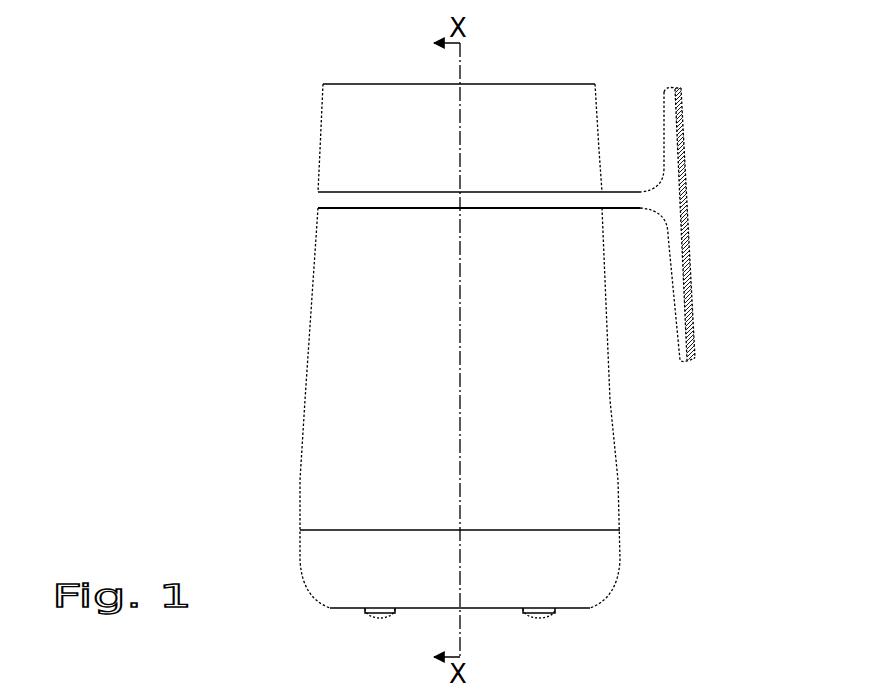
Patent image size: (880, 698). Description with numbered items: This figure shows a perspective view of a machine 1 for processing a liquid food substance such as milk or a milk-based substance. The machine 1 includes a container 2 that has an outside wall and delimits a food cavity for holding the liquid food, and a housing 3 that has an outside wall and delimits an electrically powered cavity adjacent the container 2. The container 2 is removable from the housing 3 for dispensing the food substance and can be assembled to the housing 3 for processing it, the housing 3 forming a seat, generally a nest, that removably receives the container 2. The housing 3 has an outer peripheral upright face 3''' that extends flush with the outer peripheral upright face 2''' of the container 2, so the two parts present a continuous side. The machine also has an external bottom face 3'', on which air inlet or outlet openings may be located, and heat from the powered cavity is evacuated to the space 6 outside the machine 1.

The machine 1 is at (176, 79).
The container 2 is at (475, 115).
The outer peripheral upright face of container 2''' is at (508, 107).
The housing 3 is at (500, 434).
The outer peripheral upright face of housing 3''' is at (684, 408).
The machine external bottom face 3'' is at (507, 634).
The space outside the machine 6 is at (266, 645).